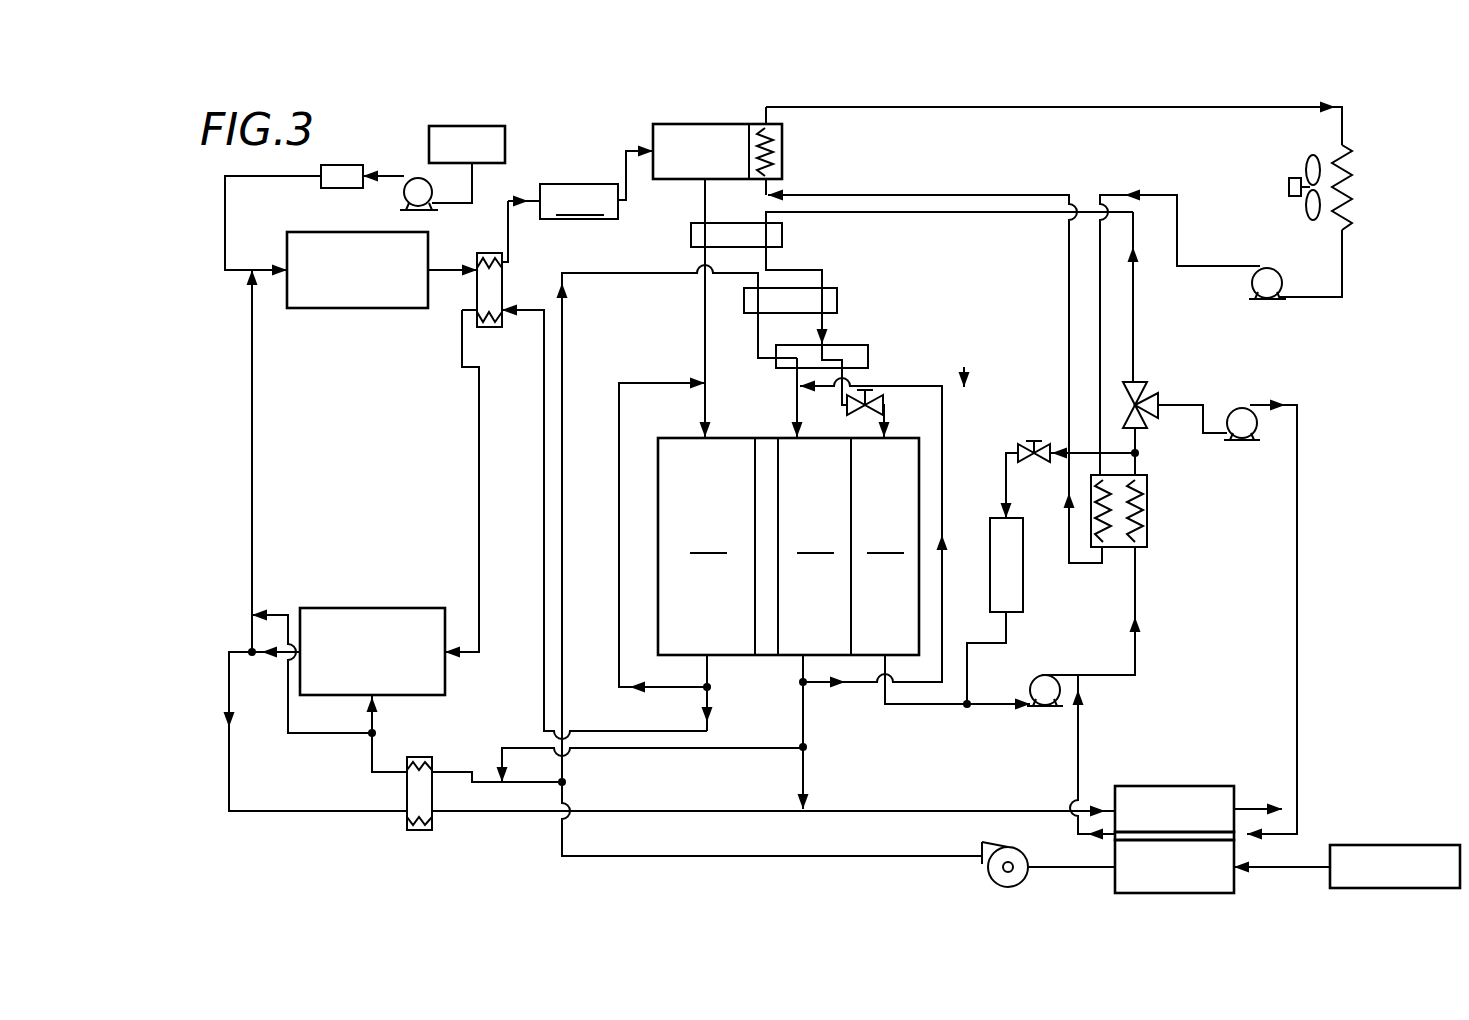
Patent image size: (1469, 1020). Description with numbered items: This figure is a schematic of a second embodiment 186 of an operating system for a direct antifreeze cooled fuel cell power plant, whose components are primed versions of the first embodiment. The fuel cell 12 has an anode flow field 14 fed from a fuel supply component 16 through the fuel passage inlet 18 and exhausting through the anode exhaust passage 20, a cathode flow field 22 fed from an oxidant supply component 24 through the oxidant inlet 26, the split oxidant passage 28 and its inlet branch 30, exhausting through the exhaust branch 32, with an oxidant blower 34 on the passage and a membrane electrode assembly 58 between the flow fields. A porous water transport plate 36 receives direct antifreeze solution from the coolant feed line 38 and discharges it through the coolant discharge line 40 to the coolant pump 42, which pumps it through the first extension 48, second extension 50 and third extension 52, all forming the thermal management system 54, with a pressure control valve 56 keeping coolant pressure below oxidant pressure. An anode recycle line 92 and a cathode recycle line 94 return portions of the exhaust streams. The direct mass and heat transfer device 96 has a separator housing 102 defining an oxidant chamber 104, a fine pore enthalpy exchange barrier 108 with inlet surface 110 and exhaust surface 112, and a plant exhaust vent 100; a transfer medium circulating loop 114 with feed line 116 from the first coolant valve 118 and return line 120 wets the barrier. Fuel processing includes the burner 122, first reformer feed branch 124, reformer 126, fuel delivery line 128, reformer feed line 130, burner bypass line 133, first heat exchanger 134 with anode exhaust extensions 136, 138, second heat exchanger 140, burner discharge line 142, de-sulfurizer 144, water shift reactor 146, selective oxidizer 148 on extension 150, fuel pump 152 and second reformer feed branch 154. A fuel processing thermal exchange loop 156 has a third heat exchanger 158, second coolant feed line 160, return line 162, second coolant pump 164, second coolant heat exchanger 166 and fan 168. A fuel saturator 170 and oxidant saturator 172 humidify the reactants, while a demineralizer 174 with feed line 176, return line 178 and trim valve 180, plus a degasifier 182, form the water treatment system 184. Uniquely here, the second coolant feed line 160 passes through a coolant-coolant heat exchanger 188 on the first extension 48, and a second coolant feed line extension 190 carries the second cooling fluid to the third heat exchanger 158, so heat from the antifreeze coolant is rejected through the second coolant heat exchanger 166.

The fuel cell 12 is at (788, 591).
The anode flow field 14 is at (706, 546).
The fuel supply component 16 is at (505, 132).
The fuel passage inlet 18 is at (705, 330).
The anode exhaust passage 20 is at (707, 695).
The cathode flow field 22 is at (814, 546).
The oxidant supply component 24 is at (1415, 845).
The oxidant inlet 26 is at (1298, 867).
The split oxidant passage 28 is at (1082, 867).
The inlet branch 30 is at (640, 275).
The exhaust branch 32 is at (803, 747).
The oxidant blower 34 is at (990, 880).
The porous water transport plate 36 is at (885, 546).
The coolant feed line 38 is at (868, 394).
The coolant discharge line 40 is at (885, 704).
The coolant pump 42 is at (1044, 708).
The coolant feed line first extension 48 is at (1138, 578).
The coolant feed line second extension 50 is at (1140, 443).
The coolant feed line third extension 52 is at (940, 212).
The thermal management system 54 is at (1071, 627).
The pressure control valve 56 is at (842, 406).
The membrane electrode assembly 58 is at (768, 445).
The anode recycle line 92 is at (619, 597).
The cathode recycle line 94 is at (942, 532).
The direct mass and heat transfer device 96 is at (1088, 893).
The plant exhaust vent 100 is at (1202, 803).
The separator housing 102 is at (1180, 786).
The oxidant chamber 104 is at (1277, 906).
The fine pore enthalpy exchange barrier 108 is at (1180, 838).
The inlet surface 110 is at (1125, 840).
The exhaust surface 112 is at (1156, 830).
The transfer medium circulating loop 114 is at (1229, 592).
The liquid transfer medium feed line 116 is at (1297, 630).
The first coolant valve 118 is at (1145, 382).
The liquid transfer medium return line 120 is at (1078, 716).
The burner 122 is at (370, 608).
The first reformer feed branch 124 is at (470, 770).
The reformer 126 is at (330, 300).
The fuel delivery line 128 is at (473, 192).
The reformer feed line 130 is at (252, 440).
The burner bypass line 133 is at (288, 612).
The first heat exchanger 134 is at (492, 327).
The anode exhaust passage first extension 136 is at (543, 515).
The anode exhaust passage second extension 138 is at (479, 545).
The second heat exchanger 140 is at (422, 832).
The burner discharge line 142 is at (232, 760).
The de-sulfurizer 144 is at (352, 165).
The water shift reactor 146 is at (579, 201).
The selective oxidizer 148 is at (729, 139).
The reformed fuel discharge line extension 150 is at (628, 185).
The fuel pump 152 is at (408, 190).
The second reformer feed branch 154 is at (620, 750).
The fuel processing thermal exchange loop 156 is at (1222, 136).
The third heat exchanger 158 is at (776, 128).
The second coolant feed line 160 is at (1148, 194).
The second coolant return line 162 is at (910, 110).
The second coolant pump 164 is at (1256, 280).
The second coolant heat exchanger 166 is at (1350, 178).
The second coolant fan 168 is at (1311, 220).
The fuel saturator 170 is at (782, 230).
The oxidant saturator 172 is at (837, 295).
The demineralizer 174 is at (990, 525).
The demineralizer feed line 176 is at (1026, 440).
The demineralizer return line 178 is at (968, 656).
The second coolant trim valve 180 is at (1056, 446).
The degasifier 182 is at (868, 352).
The water treatment system 184 is at (964, 367).
The second embodiment of the operating system 186 is at (1364, 332).
The coolant-coolant heat exchanger 188 is at (1150, 515).
The second coolant feed line extension 190 is at (1069, 300).